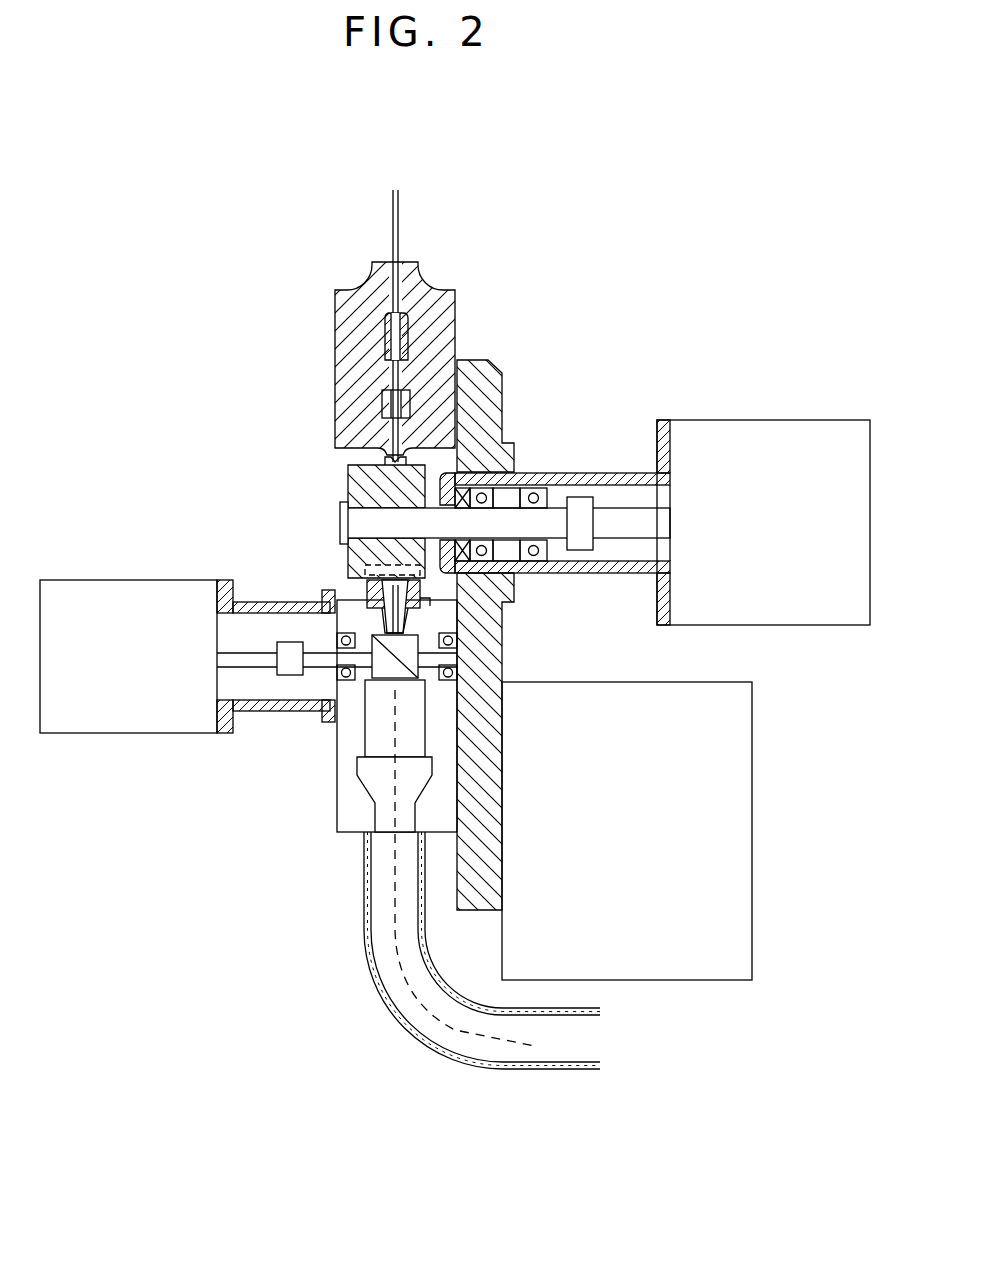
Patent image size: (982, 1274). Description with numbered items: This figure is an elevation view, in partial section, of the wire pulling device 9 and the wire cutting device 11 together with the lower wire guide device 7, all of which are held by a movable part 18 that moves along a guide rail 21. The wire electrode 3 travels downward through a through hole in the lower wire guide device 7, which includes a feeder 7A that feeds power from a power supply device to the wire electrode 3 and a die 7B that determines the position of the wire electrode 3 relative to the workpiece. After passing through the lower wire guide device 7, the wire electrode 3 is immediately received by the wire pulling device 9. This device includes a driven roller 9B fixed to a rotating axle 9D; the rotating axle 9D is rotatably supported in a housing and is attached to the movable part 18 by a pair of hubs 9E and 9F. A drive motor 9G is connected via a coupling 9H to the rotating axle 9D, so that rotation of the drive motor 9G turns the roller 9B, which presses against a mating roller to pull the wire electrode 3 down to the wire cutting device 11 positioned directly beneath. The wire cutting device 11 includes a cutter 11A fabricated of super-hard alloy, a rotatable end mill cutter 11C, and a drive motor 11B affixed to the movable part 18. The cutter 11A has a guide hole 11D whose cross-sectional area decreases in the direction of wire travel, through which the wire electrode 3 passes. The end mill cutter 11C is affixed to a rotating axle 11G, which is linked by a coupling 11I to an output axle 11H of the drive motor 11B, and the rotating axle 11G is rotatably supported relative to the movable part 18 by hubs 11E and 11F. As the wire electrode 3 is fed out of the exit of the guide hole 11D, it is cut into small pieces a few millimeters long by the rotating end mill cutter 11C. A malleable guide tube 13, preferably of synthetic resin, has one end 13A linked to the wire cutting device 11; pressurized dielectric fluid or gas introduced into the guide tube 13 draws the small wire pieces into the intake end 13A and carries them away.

The wire electrode 3 is at (398, 207).
The lower wire guide device 7 is at (440, 296).
The feeder 7A is at (393, 325).
The die 7B is at (410, 405).
The wire pulling device 9 is at (316, 461).
The driven roller 9B is at (348, 484).
The rotating axle 9D is at (345, 520).
The hub 9E is at (495, 500).
The hub 9F is at (548, 486).
The drive motor 9G is at (756, 436).
The coupling 9H is at (581, 532).
The wire cutting device 11 is at (263, 553).
The cutter 11A is at (383, 625).
The drive motor 11B is at (83, 710).
The end mill cutter 11C is at (395, 663).
The guide hole 11D is at (425, 601).
The hub 11E is at (340, 612).
The hub 11F is at (367, 600).
The rotating axle 11G is at (322, 657).
The output axle 11H is at (237, 657).
The coupling 11I is at (290, 662).
The guide tube 13 is at (444, 879).
The end of guide tube 13A is at (362, 832).
The movable part 18 is at (500, 668).
The guide rail 21 is at (740, 818).